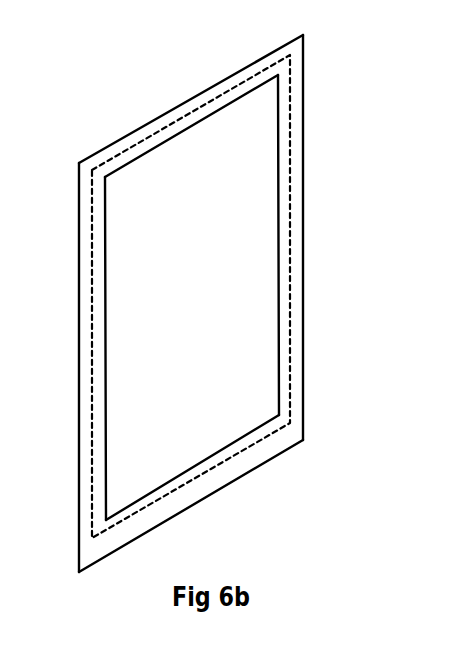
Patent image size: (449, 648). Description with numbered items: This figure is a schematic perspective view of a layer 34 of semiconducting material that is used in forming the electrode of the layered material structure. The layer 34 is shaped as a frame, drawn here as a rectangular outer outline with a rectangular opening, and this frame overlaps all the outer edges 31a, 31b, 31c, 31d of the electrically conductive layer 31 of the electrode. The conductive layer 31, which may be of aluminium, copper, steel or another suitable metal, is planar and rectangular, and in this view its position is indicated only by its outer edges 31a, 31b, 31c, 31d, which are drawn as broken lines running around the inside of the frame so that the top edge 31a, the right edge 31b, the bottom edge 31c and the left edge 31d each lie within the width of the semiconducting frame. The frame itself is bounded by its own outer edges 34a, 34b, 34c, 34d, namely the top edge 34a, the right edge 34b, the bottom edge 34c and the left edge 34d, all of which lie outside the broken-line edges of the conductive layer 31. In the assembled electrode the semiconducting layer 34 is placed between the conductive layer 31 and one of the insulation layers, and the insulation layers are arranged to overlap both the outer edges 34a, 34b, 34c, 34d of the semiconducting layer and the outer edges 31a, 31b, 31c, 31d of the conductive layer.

The electrically conductive layer 31 is at (221, 297).
The outer edge of the conductive layer 31a is at (132, 150).
The outer edge of the conductive layer 31b is at (290, 194).
The outer edge of the conductive layer 31c is at (195, 472).
The outer edge of the conductive layer 31d is at (93, 370).
The layer of semiconducting material 34 is at (195, 302).
The outer edge of the semiconducting layer 34a is at (185, 100).
The outer edge of the semiconducting layer 34b is at (305, 348).
The outer edge of the semiconducting layer 34c is at (235, 478).
The outer edge of the semiconducting layer 34d is at (78, 343).